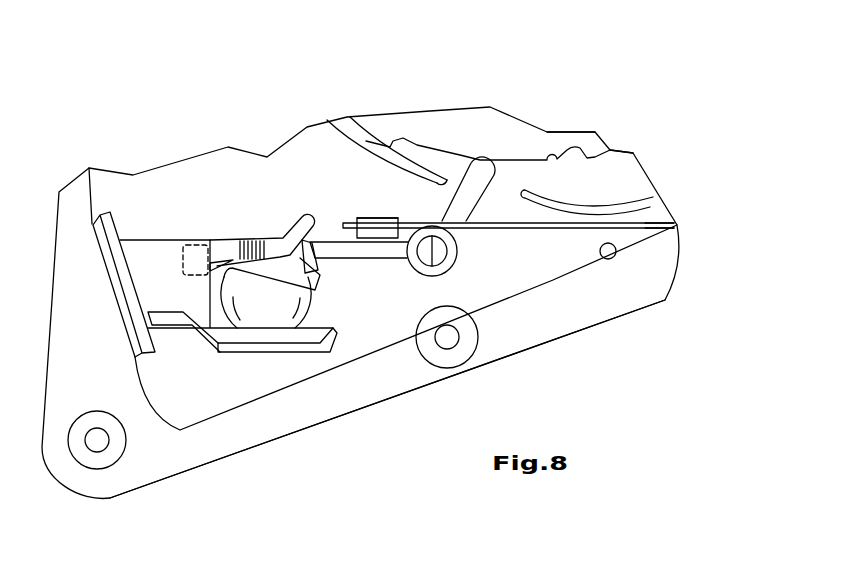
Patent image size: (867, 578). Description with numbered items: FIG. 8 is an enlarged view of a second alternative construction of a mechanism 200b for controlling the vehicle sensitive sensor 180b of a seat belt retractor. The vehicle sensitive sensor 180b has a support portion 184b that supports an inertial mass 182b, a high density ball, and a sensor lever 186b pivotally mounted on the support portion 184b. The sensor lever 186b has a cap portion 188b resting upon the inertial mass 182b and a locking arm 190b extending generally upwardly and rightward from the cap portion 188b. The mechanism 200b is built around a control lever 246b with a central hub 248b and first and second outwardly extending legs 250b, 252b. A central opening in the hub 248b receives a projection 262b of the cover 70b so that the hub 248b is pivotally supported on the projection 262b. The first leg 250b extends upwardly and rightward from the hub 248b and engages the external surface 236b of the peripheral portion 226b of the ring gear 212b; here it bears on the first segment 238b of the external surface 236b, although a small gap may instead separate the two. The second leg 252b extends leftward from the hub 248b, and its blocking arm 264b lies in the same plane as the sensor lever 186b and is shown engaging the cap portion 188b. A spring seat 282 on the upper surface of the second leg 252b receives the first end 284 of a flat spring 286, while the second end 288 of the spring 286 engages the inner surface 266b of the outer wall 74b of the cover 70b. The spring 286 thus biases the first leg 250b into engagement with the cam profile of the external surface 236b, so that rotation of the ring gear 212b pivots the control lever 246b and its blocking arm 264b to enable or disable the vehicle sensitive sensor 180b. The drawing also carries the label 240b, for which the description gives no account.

The mechanism for controlling the vehicle sensitive sensor 200b is at (252, 105).
The slot 240b is at (370, 137).
The peripheral portion 226b is at (458, 132).
The ring gear 212b is at (505, 147).
The first segment 238b is at (567, 150).
The external surface 236b is at (633, 153).
The first leg 250b is at (486, 180).
The second end 288 is at (645, 224).
The flat spring 286 is at (492, 226).
The spring seat 282 is at (368, 233).
The first end 284 is at (386, 219).
The central hub 248b is at (450, 258).
The control lever 246b is at (447, 264).
The projection 262b is at (432, 251).
The second leg 252b is at (395, 252).
The inner surface 266b is at (616, 253).
The outer wall 74b is at (565, 312).
The cover 70b is at (155, 447).
The vehicle sensitive sensor 180b is at (243, 370).
The support portion 184b is at (270, 353).
The inertial mass 182b is at (310, 309).
The cap portion 188b is at (312, 278).
The sensor lever 186b is at (222, 252).
The locking arm 190b is at (305, 223).
The blocking arm 264b is at (313, 252).